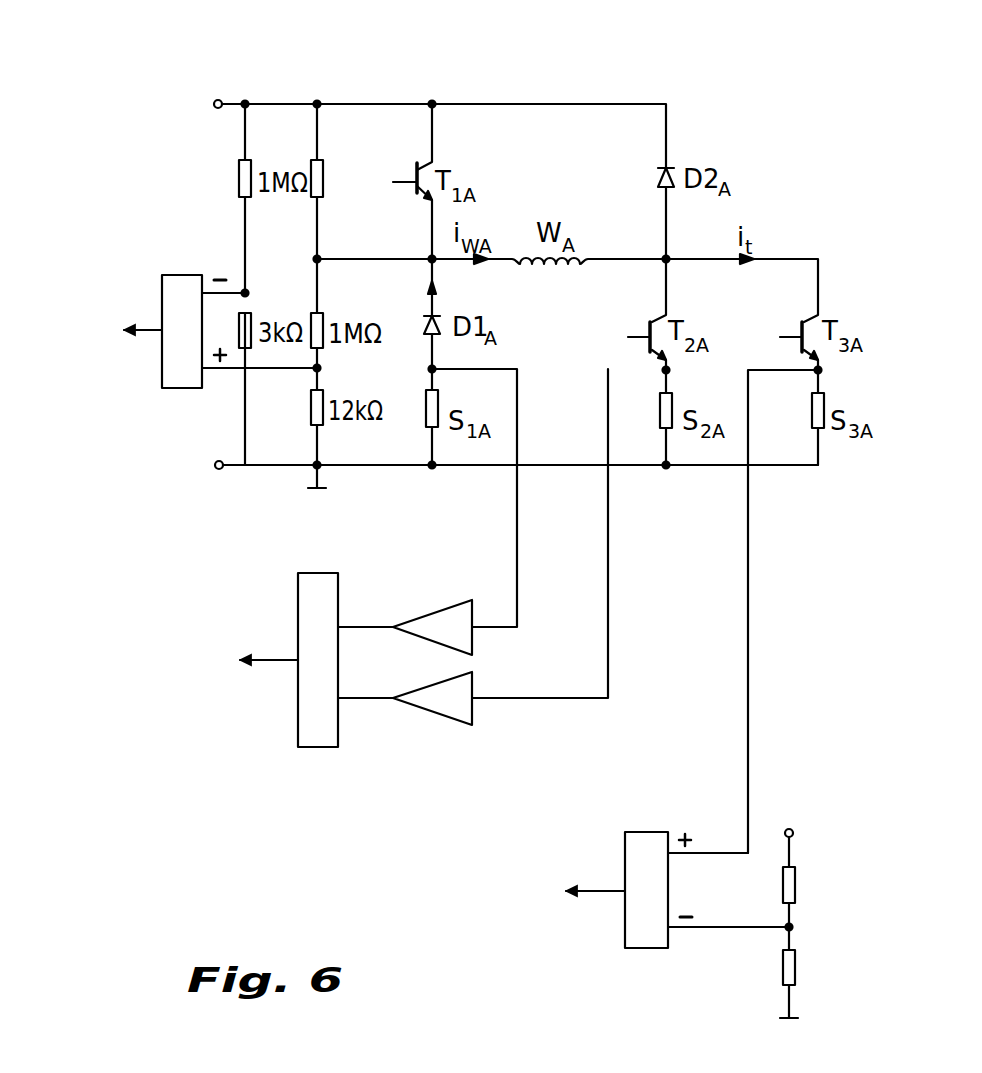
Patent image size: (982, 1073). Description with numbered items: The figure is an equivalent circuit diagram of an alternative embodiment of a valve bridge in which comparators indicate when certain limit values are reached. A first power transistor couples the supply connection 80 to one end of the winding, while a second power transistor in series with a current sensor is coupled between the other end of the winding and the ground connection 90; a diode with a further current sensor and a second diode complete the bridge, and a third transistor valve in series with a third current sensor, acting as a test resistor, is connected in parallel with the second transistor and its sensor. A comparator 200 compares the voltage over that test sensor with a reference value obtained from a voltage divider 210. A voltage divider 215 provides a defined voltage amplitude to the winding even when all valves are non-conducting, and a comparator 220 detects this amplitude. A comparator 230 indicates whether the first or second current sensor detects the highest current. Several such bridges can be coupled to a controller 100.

The connection 80 is at (218, 99).
The ground connection 90 is at (218, 468).
The controller 100 is at (321, 606).
The comparator 200 is at (643, 949).
The voltage divider 210 is at (874, 857).
The voltage divider 215 is at (288, 95).
The comparator 220 is at (182, 274).
The comparator 230 is at (318, 749).